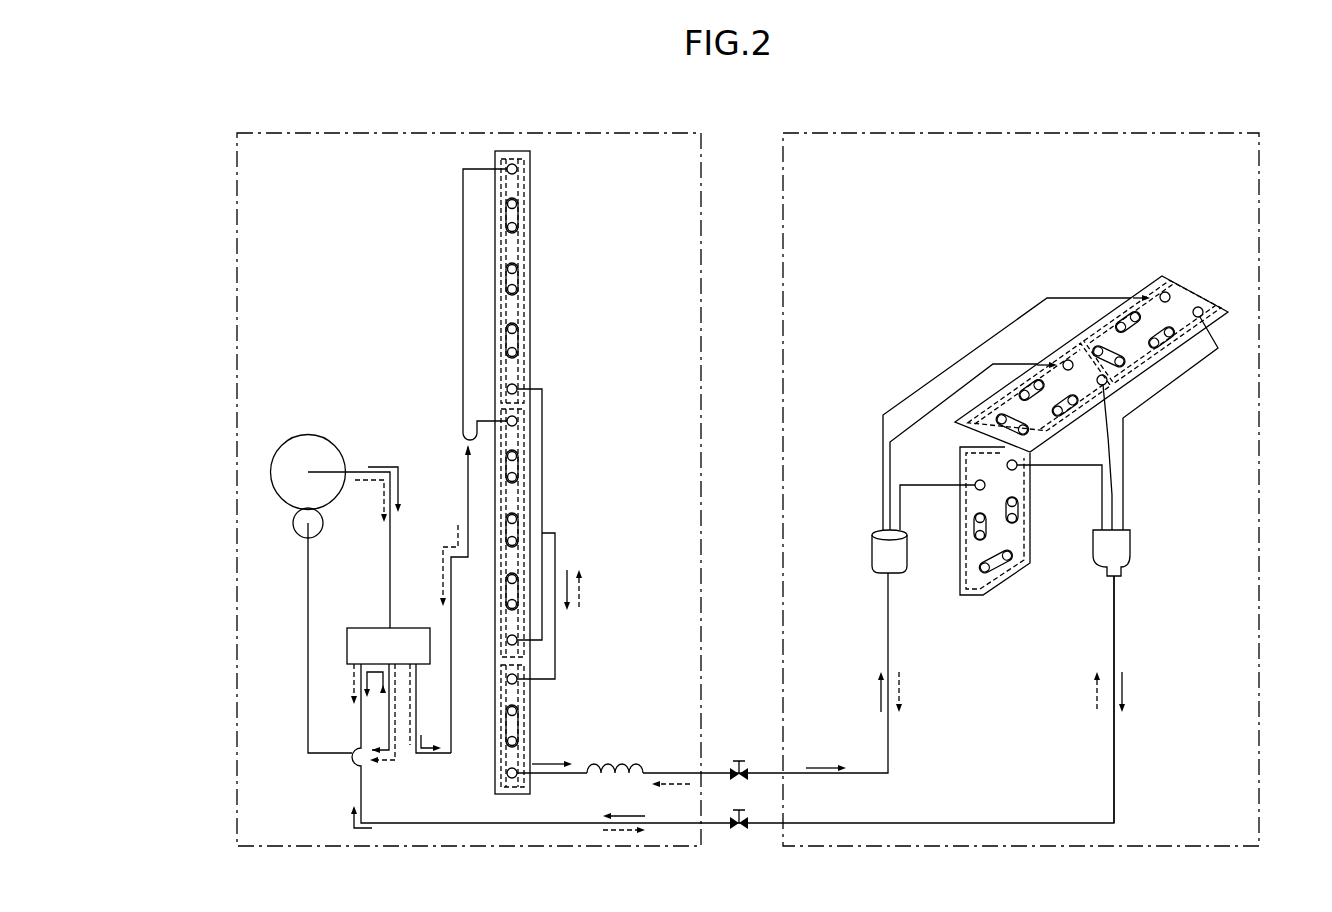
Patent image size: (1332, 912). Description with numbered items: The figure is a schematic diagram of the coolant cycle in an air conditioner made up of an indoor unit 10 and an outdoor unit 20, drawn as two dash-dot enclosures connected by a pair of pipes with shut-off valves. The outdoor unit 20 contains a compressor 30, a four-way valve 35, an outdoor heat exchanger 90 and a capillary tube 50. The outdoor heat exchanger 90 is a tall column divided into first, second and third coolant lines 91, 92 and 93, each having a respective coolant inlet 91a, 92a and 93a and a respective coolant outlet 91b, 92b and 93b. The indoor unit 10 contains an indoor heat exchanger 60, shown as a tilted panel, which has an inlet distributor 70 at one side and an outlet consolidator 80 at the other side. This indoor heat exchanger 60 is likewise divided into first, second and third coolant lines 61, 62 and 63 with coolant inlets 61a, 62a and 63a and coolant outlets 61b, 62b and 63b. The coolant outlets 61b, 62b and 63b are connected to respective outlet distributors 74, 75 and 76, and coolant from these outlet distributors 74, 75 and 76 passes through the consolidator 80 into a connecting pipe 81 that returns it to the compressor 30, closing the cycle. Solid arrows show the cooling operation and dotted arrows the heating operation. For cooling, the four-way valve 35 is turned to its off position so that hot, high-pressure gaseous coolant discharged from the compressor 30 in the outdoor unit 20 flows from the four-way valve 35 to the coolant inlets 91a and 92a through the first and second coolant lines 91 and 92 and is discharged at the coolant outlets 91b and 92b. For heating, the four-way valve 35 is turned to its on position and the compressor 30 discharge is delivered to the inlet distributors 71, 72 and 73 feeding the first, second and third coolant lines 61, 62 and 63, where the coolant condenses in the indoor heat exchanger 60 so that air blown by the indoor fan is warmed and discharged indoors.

The indoor unit 10 is at (1155, 133).
The outdoor unit 20 is at (515, 133).
The compressor 30 is at (288, 489).
The four-way valve 35 is at (355, 628).
The capillary tube 50 is at (618, 764).
The indoor heat exchanger 60 is at (1212, 282).
The first coolant line 61 is at (1200, 338).
The coolant inlet 61a is at (1167, 292).
The coolant outlet 61b is at (1204, 312).
The second coolant line 62 is at (1140, 398).
The coolant inlet 62a is at (1063, 359).
The coolant outlet 62b is at (1108, 381).
The third coolant line 63 is at (1005, 578).
The coolant inlet 63a is at (975, 484).
The coolant outlet 63b is at (1018, 467).
The inlet distributor 70 is at (872, 557).
The inlet distributor 71 is at (990, 334).
The inlet distributor 72 is at (930, 405).
The inlet distributor 73 is at (899, 510).
The outlet distributor 74 is at (1140, 406).
The outlet distributor 75 is at (1116, 463).
The outlet distributor 76 is at (1118, 513).
The outlet consolidator 80 is at (1131, 551).
The connecting pipe 81 is at (1115, 630).
The outdoor heat exchanger 90 is at (531, 228).
The first coolant line 91 is at (525, 254).
The coolant inlet 91a is at (517, 169).
The coolant outlet 91b is at (517, 389).
The second coolant line 92 is at (525, 466).
The coolant inlet 92a is at (517, 421).
The coolant outlet 92b is at (517, 640).
The third coolant line 93 is at (525, 722).
The coolant inlet 93a is at (517, 679).
The coolant outlet 93b is at (506, 775).